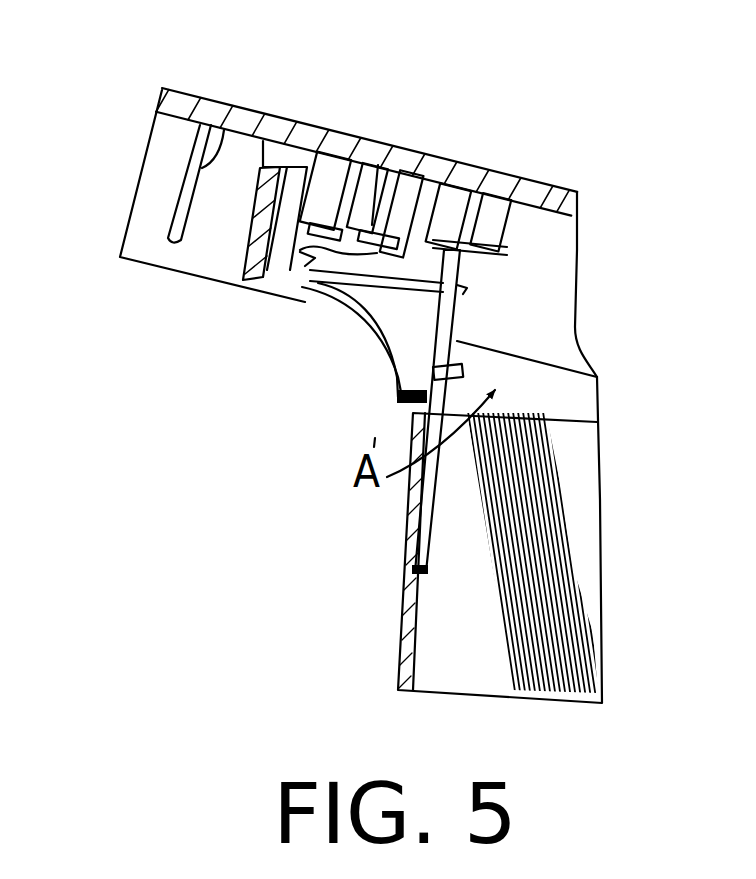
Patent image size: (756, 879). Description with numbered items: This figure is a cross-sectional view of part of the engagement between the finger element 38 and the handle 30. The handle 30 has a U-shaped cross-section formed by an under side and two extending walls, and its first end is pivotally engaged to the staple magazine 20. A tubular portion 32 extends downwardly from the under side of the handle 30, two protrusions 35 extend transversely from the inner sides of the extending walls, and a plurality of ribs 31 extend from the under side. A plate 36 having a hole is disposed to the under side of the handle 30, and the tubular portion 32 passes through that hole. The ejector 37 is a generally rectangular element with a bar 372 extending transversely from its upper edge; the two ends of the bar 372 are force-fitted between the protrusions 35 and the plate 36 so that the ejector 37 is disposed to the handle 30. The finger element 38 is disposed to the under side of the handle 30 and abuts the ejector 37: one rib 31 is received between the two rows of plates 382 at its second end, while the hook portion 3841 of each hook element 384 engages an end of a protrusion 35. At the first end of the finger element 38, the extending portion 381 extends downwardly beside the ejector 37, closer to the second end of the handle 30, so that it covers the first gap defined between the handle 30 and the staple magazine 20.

The staple magazine 20 is at (582, 518).
The handle 30 is at (316, 112).
The rib 31 is at (224, 130).
The tubular portion 32 is at (467, 186).
The protrusion 35 is at (328, 296).
The plate 36 is at (412, 165).
The ejector 37 is at (452, 372).
The finger element 38 is at (244, 314).
The bar 372 is at (460, 263).
The extending portion 381 is at (380, 345).
The plates 382 is at (265, 208).
The hook element 384 is at (258, 270).
The hook portion 3841 is at (383, 160).